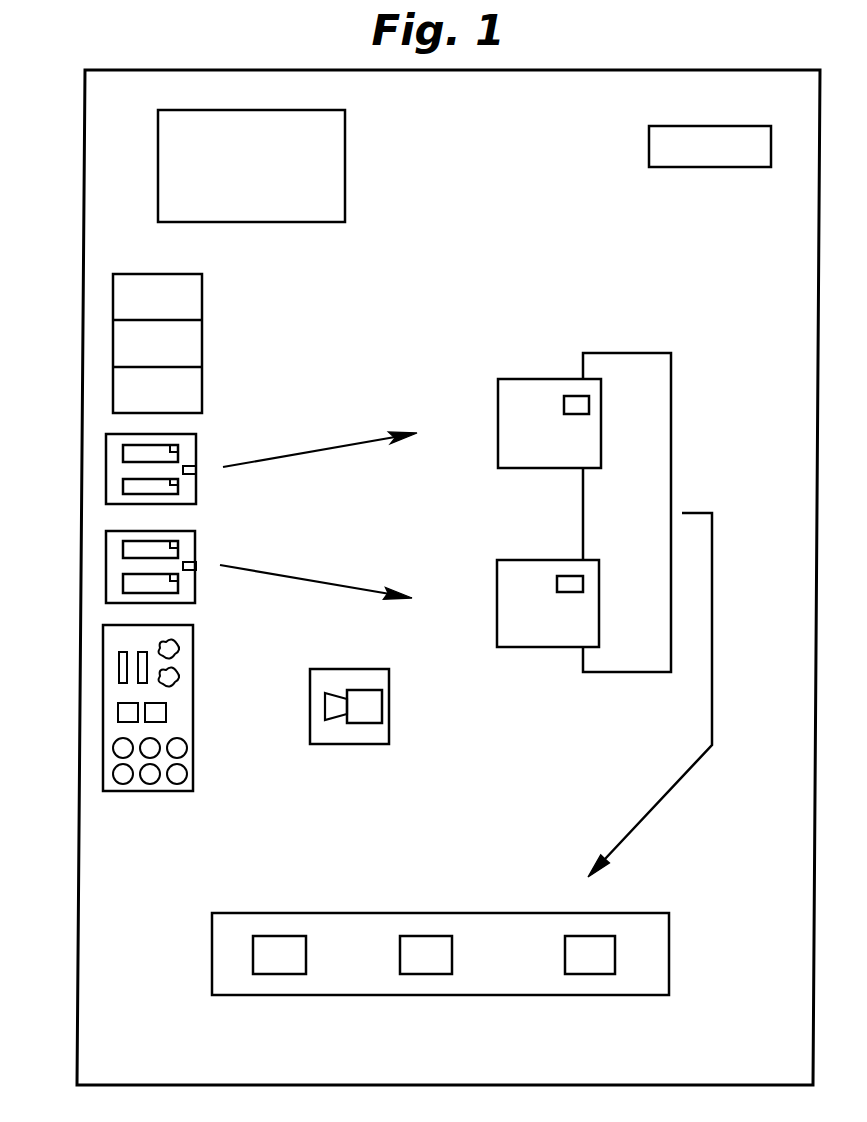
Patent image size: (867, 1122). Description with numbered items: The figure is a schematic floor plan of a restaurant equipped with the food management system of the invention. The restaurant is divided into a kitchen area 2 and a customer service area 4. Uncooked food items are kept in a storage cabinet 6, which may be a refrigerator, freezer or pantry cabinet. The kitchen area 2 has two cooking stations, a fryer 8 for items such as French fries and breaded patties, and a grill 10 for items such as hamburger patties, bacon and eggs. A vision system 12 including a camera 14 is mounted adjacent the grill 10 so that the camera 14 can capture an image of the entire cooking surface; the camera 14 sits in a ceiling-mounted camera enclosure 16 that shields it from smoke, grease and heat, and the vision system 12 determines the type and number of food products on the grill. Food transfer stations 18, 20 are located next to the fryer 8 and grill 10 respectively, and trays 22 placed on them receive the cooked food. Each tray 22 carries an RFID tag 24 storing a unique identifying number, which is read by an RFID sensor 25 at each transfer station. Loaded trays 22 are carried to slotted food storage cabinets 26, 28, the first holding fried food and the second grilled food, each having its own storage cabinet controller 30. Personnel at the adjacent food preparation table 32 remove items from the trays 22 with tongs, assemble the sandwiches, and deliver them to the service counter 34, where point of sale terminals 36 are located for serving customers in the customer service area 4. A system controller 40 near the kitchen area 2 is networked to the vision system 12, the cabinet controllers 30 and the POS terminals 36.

The kitchen area 2 is at (527, 295).
The customer service area 4 is at (464, 1076).
The storage cabinet 6 is at (274, 193).
The fryer 8 is at (157, 343).
The grill 10 is at (110, 726).
The vision system 12 is at (398, 708).
The camera 14 is at (367, 698).
The camera enclosure 16 is at (355, 744).
The food transfer station 18 is at (120, 470).
The food transfer station 20 is at (110, 577).
The tray 22 is at (133, 452).
The RFID tag 24 is at (172, 449).
The RFID sensor 25 is at (192, 470).
The food storage cabinet 26 is at (549, 423).
The food storage cabinet 28 is at (548, 604).
The storage cabinet controller 30 is at (572, 400).
The food preparation table 32 is at (620, 516).
The service counter 34 is at (651, 941).
The point of sale terminal 36 is at (434, 955).
The system controller 40 is at (710, 146).